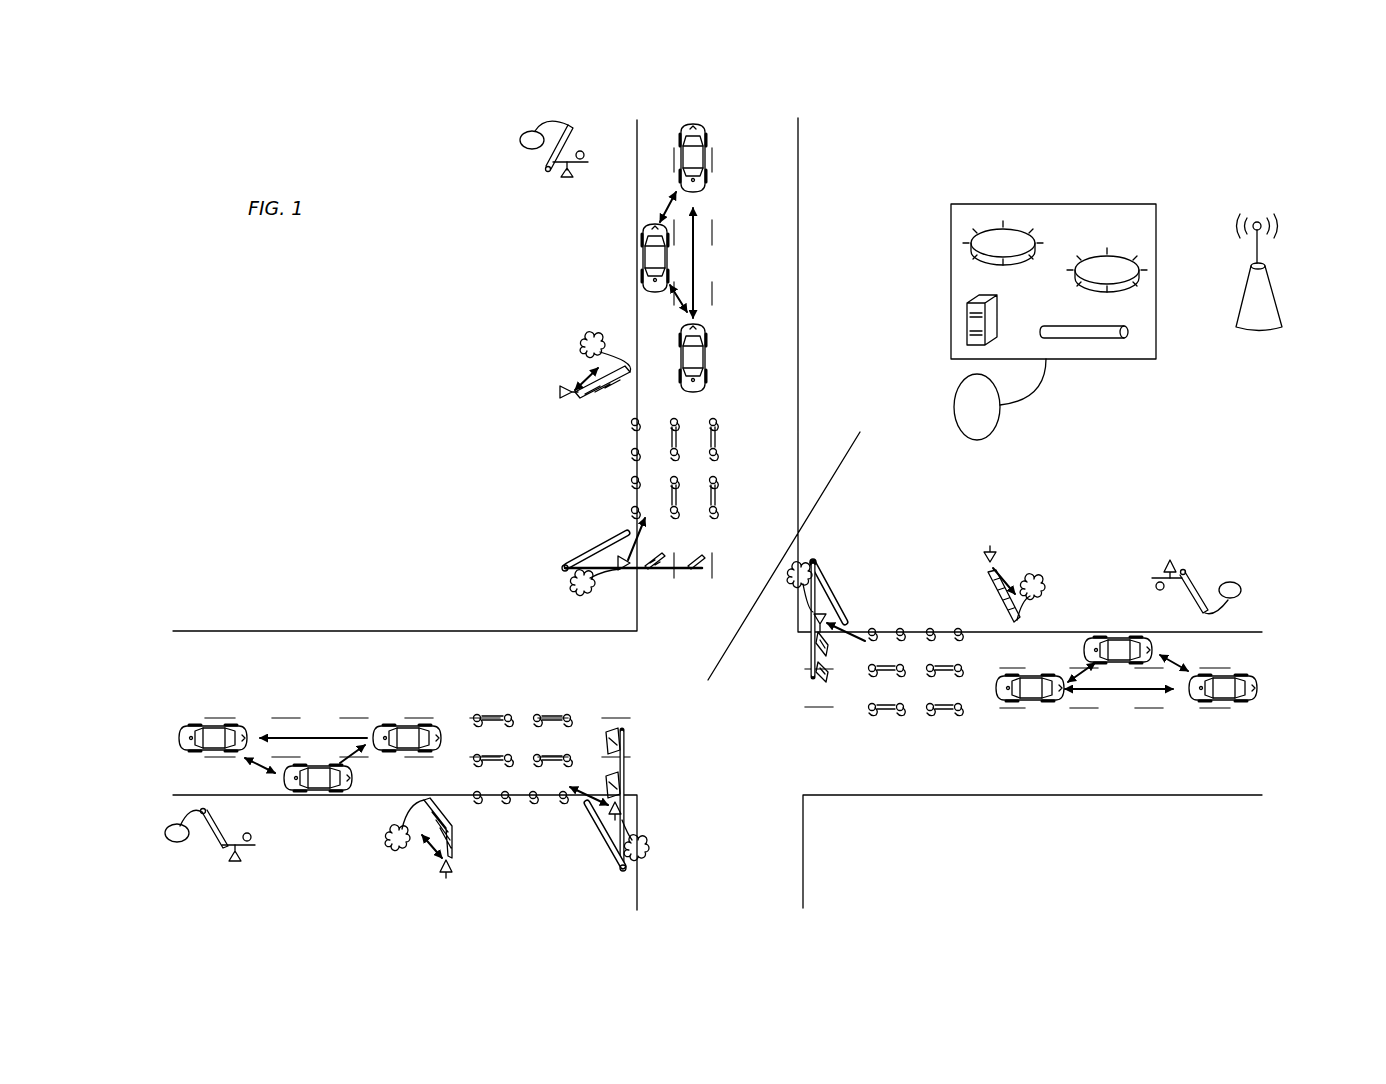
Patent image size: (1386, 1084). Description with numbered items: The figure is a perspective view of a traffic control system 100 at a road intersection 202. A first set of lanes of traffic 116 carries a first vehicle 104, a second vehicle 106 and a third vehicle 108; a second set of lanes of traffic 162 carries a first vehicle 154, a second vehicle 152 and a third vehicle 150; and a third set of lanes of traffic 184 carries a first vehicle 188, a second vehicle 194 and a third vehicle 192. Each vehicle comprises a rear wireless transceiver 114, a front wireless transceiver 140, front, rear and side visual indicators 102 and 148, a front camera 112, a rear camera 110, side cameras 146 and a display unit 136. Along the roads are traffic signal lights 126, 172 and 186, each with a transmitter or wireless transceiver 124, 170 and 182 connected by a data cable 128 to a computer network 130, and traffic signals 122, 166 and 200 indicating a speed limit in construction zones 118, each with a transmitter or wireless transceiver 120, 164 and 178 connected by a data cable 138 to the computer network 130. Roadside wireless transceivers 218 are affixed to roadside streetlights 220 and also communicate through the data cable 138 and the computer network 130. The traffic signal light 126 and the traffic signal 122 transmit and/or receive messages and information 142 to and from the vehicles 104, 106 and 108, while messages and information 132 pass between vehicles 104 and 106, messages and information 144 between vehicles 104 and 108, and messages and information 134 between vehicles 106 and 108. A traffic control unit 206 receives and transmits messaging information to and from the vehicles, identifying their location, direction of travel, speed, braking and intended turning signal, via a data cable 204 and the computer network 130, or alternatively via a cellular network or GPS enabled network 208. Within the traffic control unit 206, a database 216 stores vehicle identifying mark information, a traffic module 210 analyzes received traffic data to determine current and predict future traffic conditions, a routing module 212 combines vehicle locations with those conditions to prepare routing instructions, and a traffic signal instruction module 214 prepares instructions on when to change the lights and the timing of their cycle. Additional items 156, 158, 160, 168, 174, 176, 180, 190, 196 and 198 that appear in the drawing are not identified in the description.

The traffic control system 100 is at (1135, 500).
The visual indicators 102 is at (688, 127).
The first vehicle 104 is at (1027, 705).
The second vehicle 106 is at (1235, 700).
The third vehicle 108 is at (1128, 641).
The rear camera 110 is at (695, 125).
The front camera 112 is at (703, 195).
The rear wireless transceiver 114 is at (700, 137).
The first set of lanes of traffic 116 is at (843, 695).
The construction zones 118 is at (728, 418).
The wireless transceiver 120 is at (988, 548).
The traffic signal 122 is at (990, 573).
The wireless transceiver 124 is at (822, 600).
The traffic signal light 126 is at (813, 658).
The data cable 128 is at (610, 580).
The computer network 130 is at (583, 343).
The messages and information 132 is at (1128, 680).
The messages and information 134 is at (1178, 650).
The display unit 136 is at (703, 170).
The data cable 138 is at (627, 362).
The front wireless transceiver 140 is at (688, 182).
The messages and information 142 is at (852, 627).
The messages and information 144 is at (1119, 700).
The side cameras 146 is at (677, 160).
The visual indicators 148 is at (692, 183).
The third vehicle 150 is at (702, 150).
The second vehicle 152 is at (648, 260).
The first vehicle 154 is at (705, 350).
The communication 156 is at (667, 207).
The communication 158 is at (700, 247).
The communication 160 is at (703, 293).
The second set of lanes of traffic 162 is at (700, 538).
The wireless transceiver 164 is at (563, 393).
The traffic signal 166 is at (583, 400).
The traffic light antenna 168 is at (625, 557).
The wireless transceiver 170 is at (607, 548).
The traffic signal light 172 is at (650, 556).
The communication 174 is at (572, 385).
The communication 176 is at (432, 848).
The wireless transceiver 178 is at (447, 876).
The traffic light antenna 180 is at (583, 802).
The wireless transceiver 182 is at (610, 812).
The third set of lanes of traffic 184 is at (592, 732).
The traffic signal light 186 is at (620, 782).
The first vehicle 188 is at (405, 725).
The vehicle 190 is at (327, 762).
The third vehicle 192 is at (203, 727).
The second vehicle 194 is at (308, 787).
The communication 196 is at (260, 763).
The communication 198 is at (313, 739).
The traffic signal 200 is at (455, 850).
The road intersection 202 is at (835, 450).
The data cable 204 is at (1040, 385).
The traffic control unit 206 is at (1090, 233).
The cellular network or GPS enabled network 208 is at (1270, 318).
The traffic module 210 is at (990, 235).
The routing module 212 is at (1130, 270).
The traffic signal instruction module 214 is at (1105, 333).
The database 216 is at (968, 312).
The roadside wireless transceivers 218 is at (560, 178).
The roadside streetlights 220 is at (588, 162).